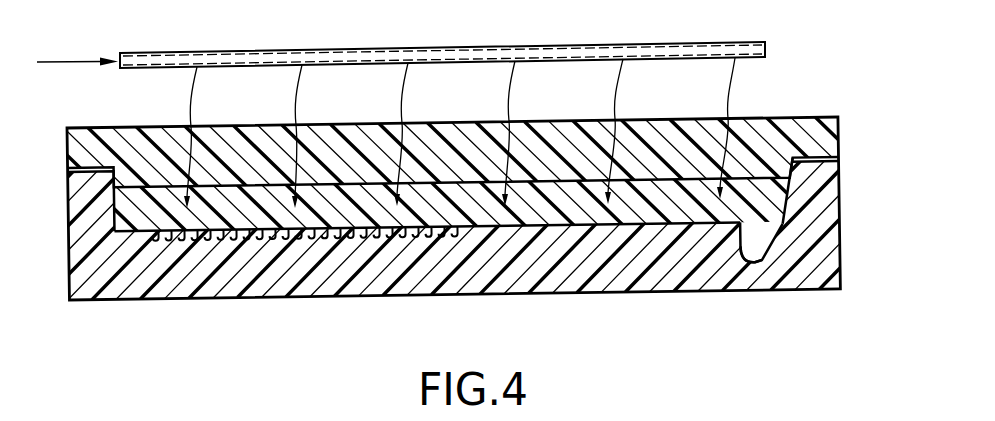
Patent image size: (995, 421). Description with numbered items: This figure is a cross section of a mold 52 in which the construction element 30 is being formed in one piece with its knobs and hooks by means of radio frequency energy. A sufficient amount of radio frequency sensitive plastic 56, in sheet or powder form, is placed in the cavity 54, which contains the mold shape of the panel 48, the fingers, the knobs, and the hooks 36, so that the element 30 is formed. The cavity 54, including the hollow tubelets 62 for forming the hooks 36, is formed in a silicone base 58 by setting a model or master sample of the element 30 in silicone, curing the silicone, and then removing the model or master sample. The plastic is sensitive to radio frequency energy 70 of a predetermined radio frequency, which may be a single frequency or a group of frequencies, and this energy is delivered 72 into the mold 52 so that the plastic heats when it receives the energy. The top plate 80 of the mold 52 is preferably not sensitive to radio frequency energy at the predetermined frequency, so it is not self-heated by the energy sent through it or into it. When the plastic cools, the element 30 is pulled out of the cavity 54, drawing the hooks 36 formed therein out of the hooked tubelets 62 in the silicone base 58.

The radio frequency energy 70 is at (72, 61).
The delivery of radio frequency energy 72 is at (193, 100).
The top plate 80 is at (788, 127).
The mold 52 is at (846, 181).
The cavity 54 is at (788, 195).
The element 30 is at (768, 240).
The silicone base 58 is at (820, 258).
The radio frequency sensitive plastic 56 is at (770, 263).
The panel 48 is at (527, 207).
The hollow tubelets 62 is at (187, 244).
The hooks 36 is at (273, 244).